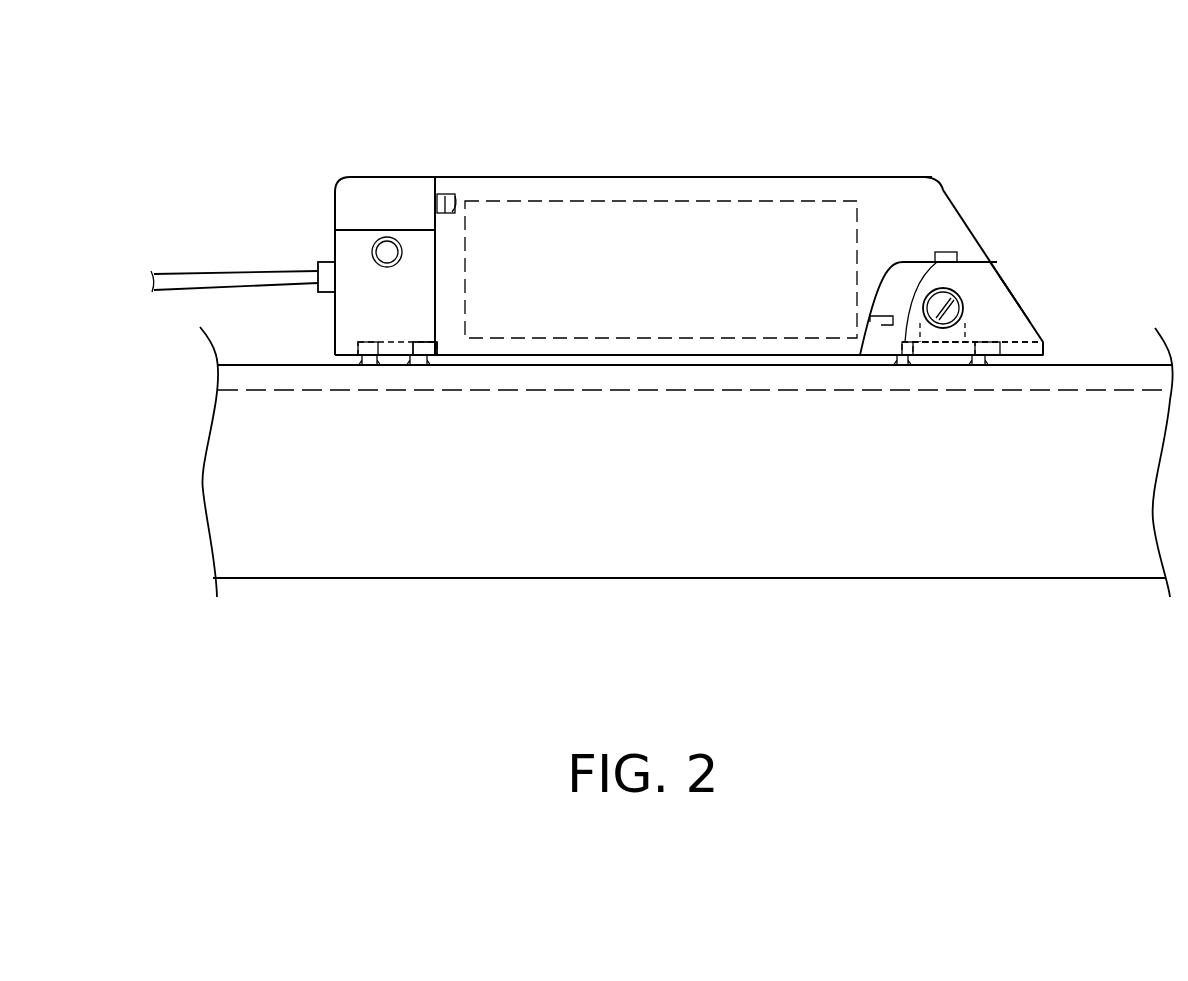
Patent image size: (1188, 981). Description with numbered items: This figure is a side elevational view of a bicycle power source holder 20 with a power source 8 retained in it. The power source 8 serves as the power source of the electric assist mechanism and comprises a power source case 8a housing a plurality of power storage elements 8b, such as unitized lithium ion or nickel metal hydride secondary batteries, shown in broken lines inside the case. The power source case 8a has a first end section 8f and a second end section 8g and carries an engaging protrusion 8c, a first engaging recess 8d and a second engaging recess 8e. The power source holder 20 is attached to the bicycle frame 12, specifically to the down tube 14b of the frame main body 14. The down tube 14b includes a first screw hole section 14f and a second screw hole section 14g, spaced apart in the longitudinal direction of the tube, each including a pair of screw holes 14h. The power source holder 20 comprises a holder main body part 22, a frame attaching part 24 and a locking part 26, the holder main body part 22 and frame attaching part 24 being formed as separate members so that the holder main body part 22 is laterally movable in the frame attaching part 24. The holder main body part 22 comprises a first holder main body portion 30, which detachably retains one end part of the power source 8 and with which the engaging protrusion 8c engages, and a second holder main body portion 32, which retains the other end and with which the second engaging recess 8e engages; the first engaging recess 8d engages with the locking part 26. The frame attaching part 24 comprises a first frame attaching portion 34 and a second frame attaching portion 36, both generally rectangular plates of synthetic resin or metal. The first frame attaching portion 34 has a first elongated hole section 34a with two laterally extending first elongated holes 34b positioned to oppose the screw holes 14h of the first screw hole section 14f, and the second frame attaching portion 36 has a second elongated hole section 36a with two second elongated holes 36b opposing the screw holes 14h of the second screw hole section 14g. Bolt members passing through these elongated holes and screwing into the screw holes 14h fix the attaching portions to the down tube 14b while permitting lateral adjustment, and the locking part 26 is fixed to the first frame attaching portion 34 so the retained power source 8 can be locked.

The power source 8 is at (844, 159).
The power source case 8a is at (531, 174).
The power storage elements 8b is at (661, 199).
The engaging protrusion 8c is at (865, 327).
The first engaging recess 8d is at (965, 230).
The second engaging recess 8e is at (447, 195).
The first end section 8f is at (922, 185).
The second end section 8g is at (467, 195).
The bicycle frame 12 is at (522, 598).
The frame main body 14 is at (888, 587).
The down tube 14b is at (735, 528).
The first screw hole section 14f is at (947, 250).
The second screw hole section 14g is at (372, 355).
The screw holes 14h is at (372, 368).
The power source holder 20 is at (958, 256).
The holder main body part 22 is at (1017, 258).
The frame attaching part 24 is at (982, 337).
The locking part 26 is at (953, 284).
The first holder main body portion 30 is at (1013, 280).
The second holder main body portion 32 is at (397, 174).
The first frame attaching portion 34 is at (1007, 347).
The first elongated hole section 34a is at (982, 337).
The first elongated holes 34b is at (928, 365).
The second frame attaching portion 36 is at (353, 345).
The second elongated hole section 36a is at (418, 338).
The second elongated holes 36b is at (380, 358).